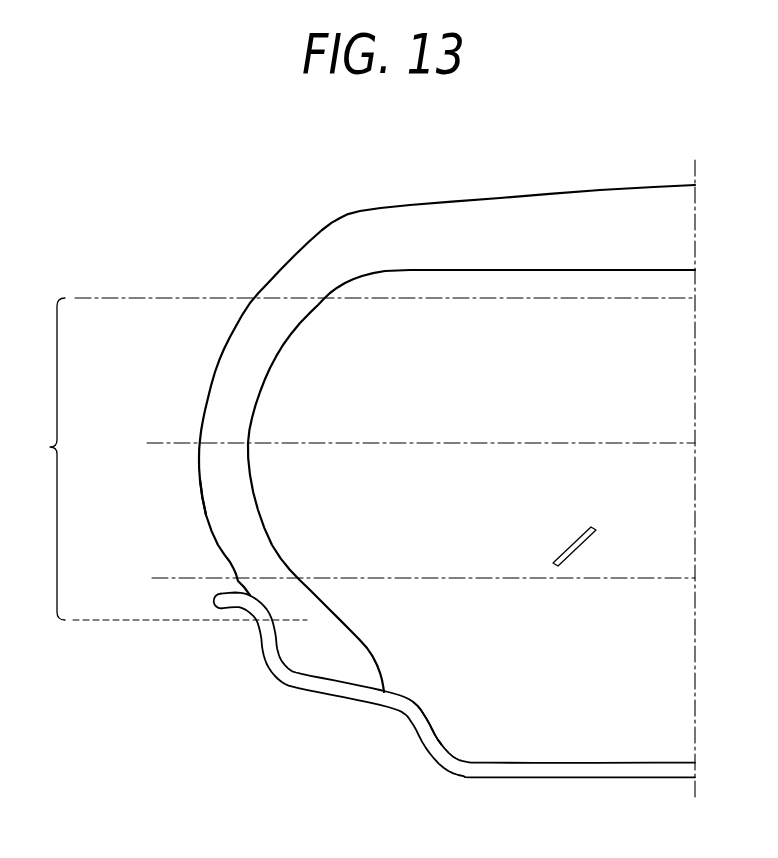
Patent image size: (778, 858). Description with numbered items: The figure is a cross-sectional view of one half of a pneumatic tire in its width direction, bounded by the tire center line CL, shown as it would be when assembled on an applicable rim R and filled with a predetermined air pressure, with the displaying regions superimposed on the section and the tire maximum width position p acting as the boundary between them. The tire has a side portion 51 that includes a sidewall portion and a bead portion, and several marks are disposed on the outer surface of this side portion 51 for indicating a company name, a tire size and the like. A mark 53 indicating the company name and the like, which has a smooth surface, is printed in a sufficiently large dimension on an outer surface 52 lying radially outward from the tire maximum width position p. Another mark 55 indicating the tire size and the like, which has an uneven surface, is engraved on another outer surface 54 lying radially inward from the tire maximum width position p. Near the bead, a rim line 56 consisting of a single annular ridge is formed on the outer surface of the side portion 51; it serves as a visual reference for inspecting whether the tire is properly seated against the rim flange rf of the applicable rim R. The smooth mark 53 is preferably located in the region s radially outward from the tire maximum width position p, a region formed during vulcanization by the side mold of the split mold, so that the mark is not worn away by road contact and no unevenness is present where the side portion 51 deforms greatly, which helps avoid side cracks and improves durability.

The side portion 51 is at (196, 465).
The outer surface 52 is at (217, 362).
The mark 53 is at (473, 332).
The outer surface 54 is at (203, 500).
The mark 55 is at (524, 570).
The rim line 56 is at (238, 581).
The tire maximum width position p is at (198, 443).
The region s is at (48, 459).
The rim flange rf is at (252, 608).
The applicable rim R is at (426, 740).
The tire center line CL is at (695, 462).